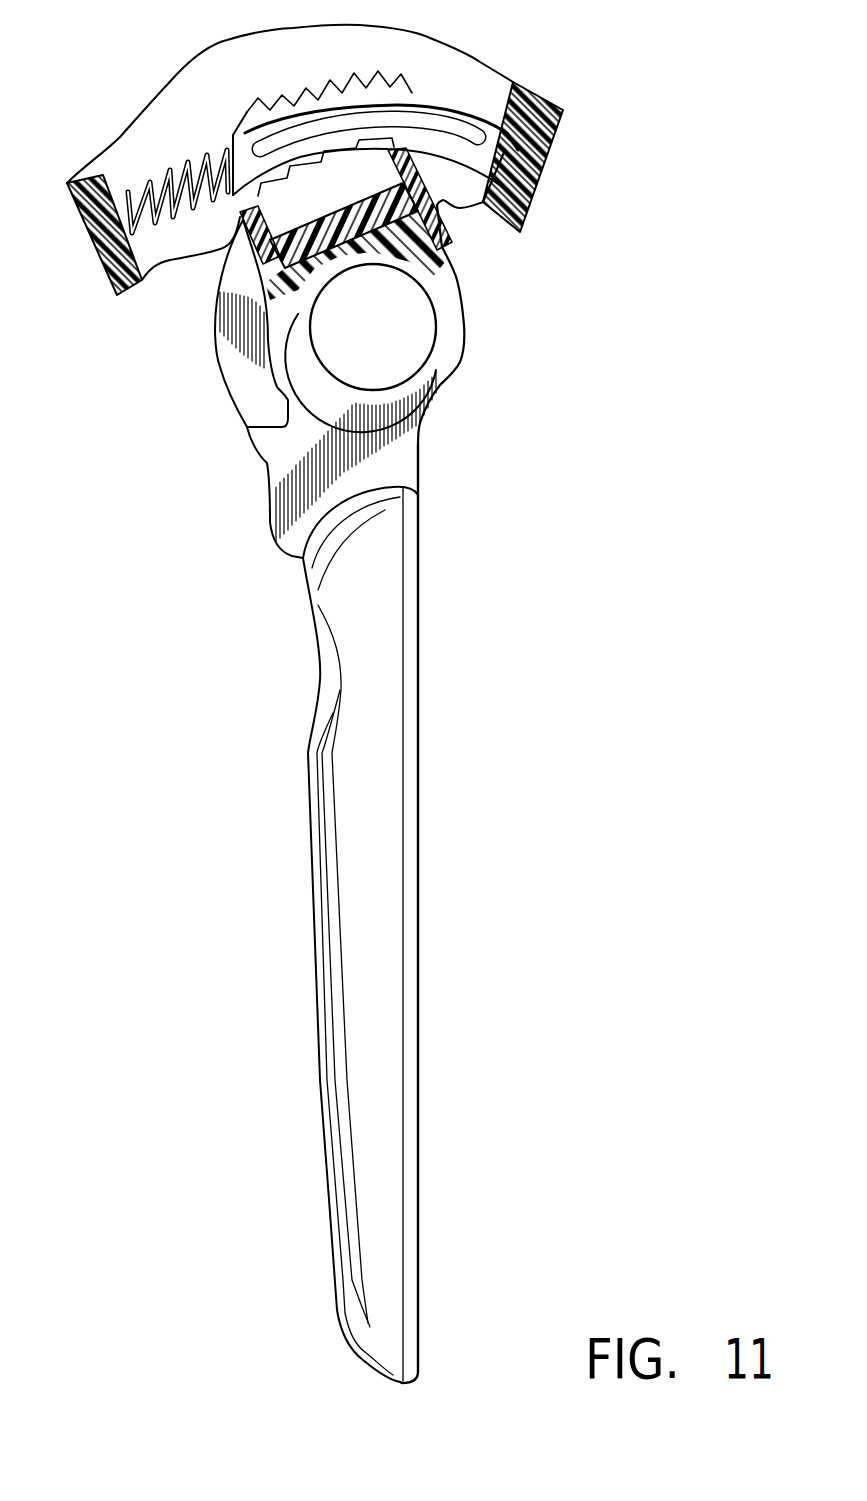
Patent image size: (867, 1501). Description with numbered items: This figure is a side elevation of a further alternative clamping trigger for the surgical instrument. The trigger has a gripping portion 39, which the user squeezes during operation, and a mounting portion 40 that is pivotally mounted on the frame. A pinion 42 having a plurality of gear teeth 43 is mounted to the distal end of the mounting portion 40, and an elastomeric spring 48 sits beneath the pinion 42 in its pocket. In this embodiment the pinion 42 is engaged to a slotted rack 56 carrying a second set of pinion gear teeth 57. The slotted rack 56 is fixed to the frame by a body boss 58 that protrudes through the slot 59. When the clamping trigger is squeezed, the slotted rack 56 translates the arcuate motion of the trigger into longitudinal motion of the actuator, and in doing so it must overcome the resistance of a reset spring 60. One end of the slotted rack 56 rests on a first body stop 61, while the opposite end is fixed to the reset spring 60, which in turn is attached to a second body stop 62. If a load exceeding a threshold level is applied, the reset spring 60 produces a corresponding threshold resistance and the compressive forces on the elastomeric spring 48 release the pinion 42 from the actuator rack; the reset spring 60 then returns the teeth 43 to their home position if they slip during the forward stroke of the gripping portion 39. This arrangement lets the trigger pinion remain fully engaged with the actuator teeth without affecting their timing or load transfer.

The gripping portion 39 is at (365, 1212).
The mounting portion 40 is at (497, 311).
The pinion 42 is at (242, 215).
The gear teeth 43 is at (363, 100).
The elastomeric spring 48 is at (305, 232).
The slotted rack 56 is at (418, 103).
The second set of pinion gear teeth 57 is at (293, 100).
The body boss 58 is at (282, 138).
The slot 59 is at (437, 133).
The reset spring 60 is at (128, 188).
The first body stop 61 is at (543, 165).
The second body stop 62 is at (103, 272).